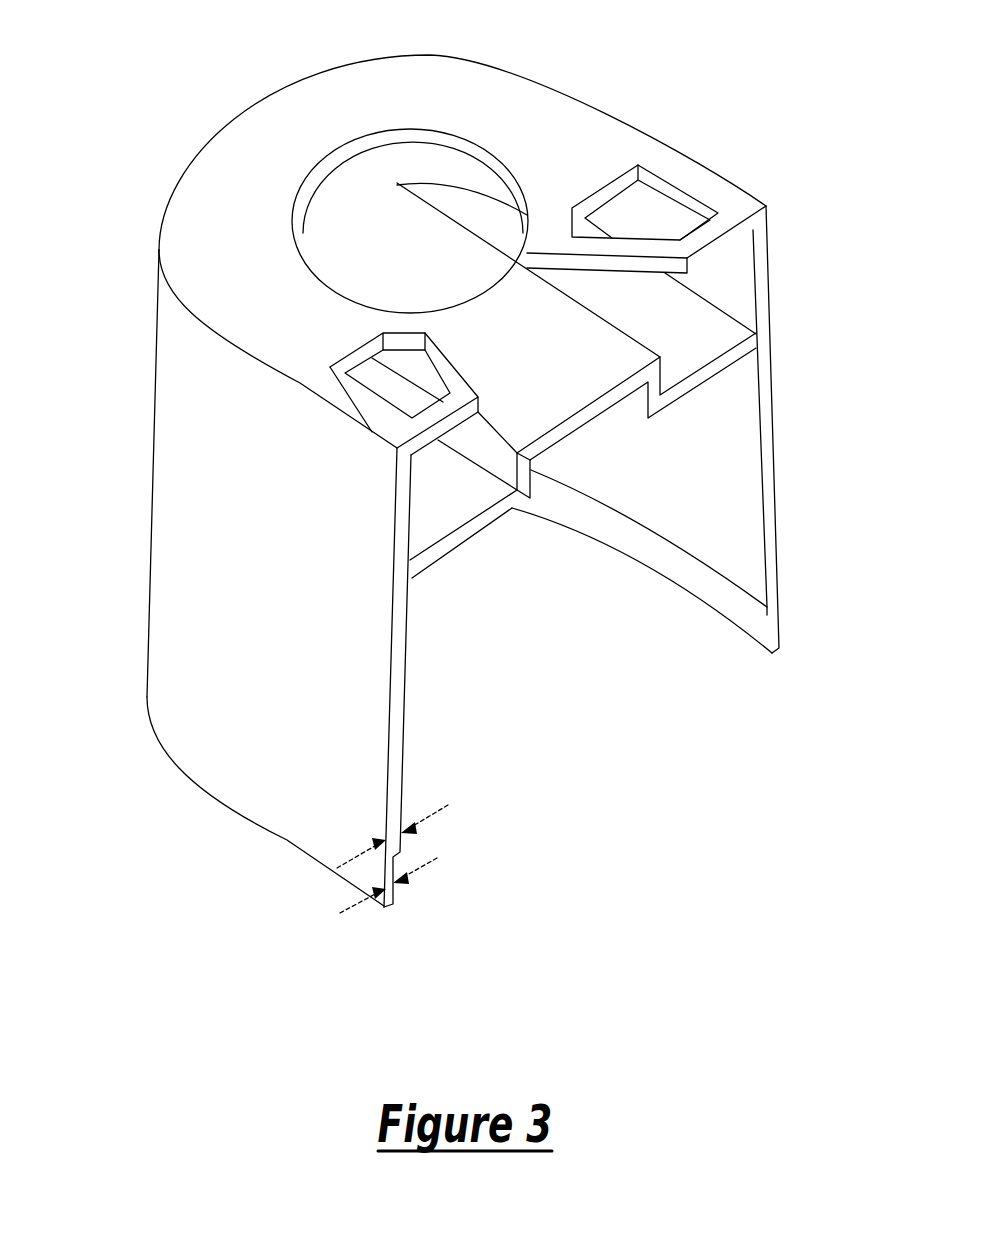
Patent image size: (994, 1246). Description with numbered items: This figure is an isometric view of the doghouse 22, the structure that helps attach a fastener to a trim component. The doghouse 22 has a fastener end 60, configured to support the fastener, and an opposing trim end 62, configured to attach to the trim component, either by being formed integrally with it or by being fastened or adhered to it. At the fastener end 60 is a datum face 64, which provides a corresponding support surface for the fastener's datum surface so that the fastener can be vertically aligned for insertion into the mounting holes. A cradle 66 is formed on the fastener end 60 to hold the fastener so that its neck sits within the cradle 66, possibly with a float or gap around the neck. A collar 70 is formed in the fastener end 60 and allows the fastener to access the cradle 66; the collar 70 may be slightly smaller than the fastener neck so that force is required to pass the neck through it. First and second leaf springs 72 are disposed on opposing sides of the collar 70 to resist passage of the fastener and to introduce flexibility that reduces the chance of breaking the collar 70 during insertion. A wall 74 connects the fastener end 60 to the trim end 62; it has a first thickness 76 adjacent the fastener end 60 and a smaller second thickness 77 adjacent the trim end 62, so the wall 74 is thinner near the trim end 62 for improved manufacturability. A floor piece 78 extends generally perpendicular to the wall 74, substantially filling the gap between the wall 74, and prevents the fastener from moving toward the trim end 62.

The doghouse 22 is at (792, 114).
The fastener end 60 is at (98, 196).
The trim end 62 is at (98, 713).
The datum face 64 is at (238, 180).
The cradle 66 is at (443, 128).
The collar 70 is at (527, 250).
The leaf springs 72 is at (437, 330).
The wall 74 is at (210, 591).
The first thickness 76 is at (353, 855).
The second thickness 77 is at (423, 870).
The floor piece 78 is at (455, 545).